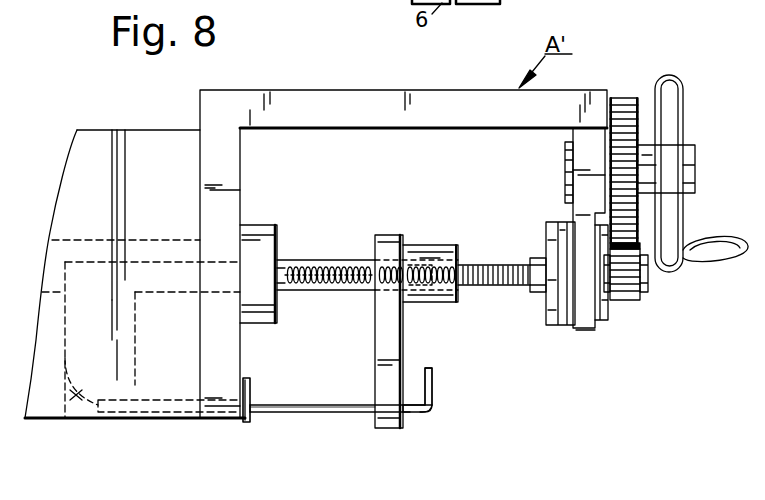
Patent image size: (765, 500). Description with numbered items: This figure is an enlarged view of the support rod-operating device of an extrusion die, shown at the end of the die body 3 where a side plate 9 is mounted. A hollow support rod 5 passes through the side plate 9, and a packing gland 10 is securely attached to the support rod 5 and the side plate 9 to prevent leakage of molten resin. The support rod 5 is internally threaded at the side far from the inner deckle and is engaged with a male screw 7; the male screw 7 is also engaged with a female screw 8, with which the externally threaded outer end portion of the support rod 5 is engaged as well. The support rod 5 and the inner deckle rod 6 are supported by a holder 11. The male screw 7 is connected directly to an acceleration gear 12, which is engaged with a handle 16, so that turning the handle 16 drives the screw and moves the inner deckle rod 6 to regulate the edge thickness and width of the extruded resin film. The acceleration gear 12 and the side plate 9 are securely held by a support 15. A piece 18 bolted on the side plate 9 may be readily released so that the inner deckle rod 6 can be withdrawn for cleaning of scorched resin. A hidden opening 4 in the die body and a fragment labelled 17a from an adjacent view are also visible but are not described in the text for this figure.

The die body 3 is at (165, 128).
The opening in wall 4 is at (62, 405).
The support rod 5 is at (331, 262).
The inner deckle rod 6 is at (336, 406).
The male screw 7 is at (508, 280).
The female screw 8 is at (432, 246).
The side plate 9 is at (223, 392).
The packing gland 10 is at (267, 225).
The holder 11 is at (389, 415).
The acceleration gear 12 is at (628, 286).
The support 15 is at (477, 98).
The handle 16 is at (677, 268).
The guide part 17a is at (455, 3).
The piece 18 is at (252, 402).